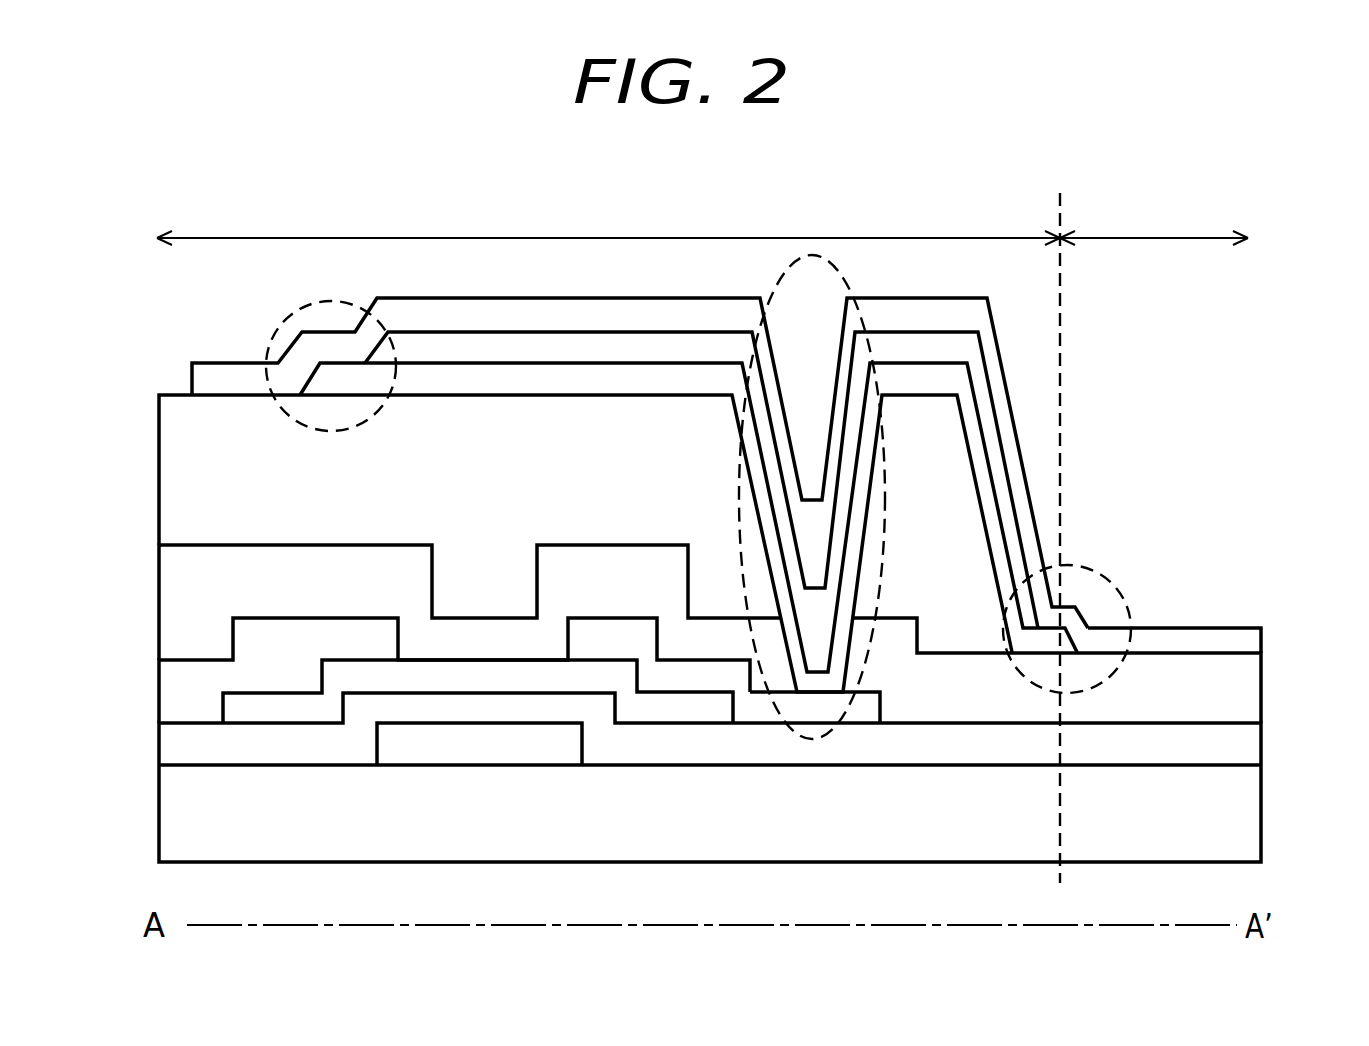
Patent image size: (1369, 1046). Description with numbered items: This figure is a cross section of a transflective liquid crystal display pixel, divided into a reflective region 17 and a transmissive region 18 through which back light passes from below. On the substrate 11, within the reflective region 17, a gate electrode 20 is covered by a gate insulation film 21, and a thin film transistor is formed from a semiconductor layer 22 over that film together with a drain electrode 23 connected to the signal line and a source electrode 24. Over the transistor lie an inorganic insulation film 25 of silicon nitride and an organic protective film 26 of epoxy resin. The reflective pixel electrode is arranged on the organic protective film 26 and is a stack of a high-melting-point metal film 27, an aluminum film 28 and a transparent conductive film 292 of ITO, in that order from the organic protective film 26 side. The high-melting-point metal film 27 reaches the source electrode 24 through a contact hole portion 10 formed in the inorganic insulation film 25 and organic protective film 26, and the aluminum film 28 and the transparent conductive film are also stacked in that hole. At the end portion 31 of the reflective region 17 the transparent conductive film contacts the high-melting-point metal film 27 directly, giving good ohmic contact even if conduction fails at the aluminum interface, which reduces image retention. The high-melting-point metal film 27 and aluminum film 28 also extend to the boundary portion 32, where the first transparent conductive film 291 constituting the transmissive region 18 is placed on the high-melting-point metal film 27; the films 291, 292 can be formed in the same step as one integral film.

The contact hole portion 10 is at (833, 272).
The substrate 11 is at (850, 850).
The reflective region 17 is at (608, 221).
The transmissive region 18 is at (1154, 222).
The gate electrode 20 is at (428, 755).
The gate insulation film 21 is at (697, 758).
The semiconductor layer 22 is at (266, 714).
The drain electrode 23 is at (198, 694).
The source electrode 24 is at (877, 710).
The inorganic insulation film 25 is at (193, 606).
The organic protective film 26 is at (185, 485).
The high-melting-point metal film 27 is at (618, 395).
The aluminum film 28 is at (512, 357).
The first transparent conductive film 291 is at (1197, 635).
The second transparent conductive film 292 is at (477, 312).
The boundary portion 31 is at (1122, 597).
The boundary portion 32 is at (287, 317).